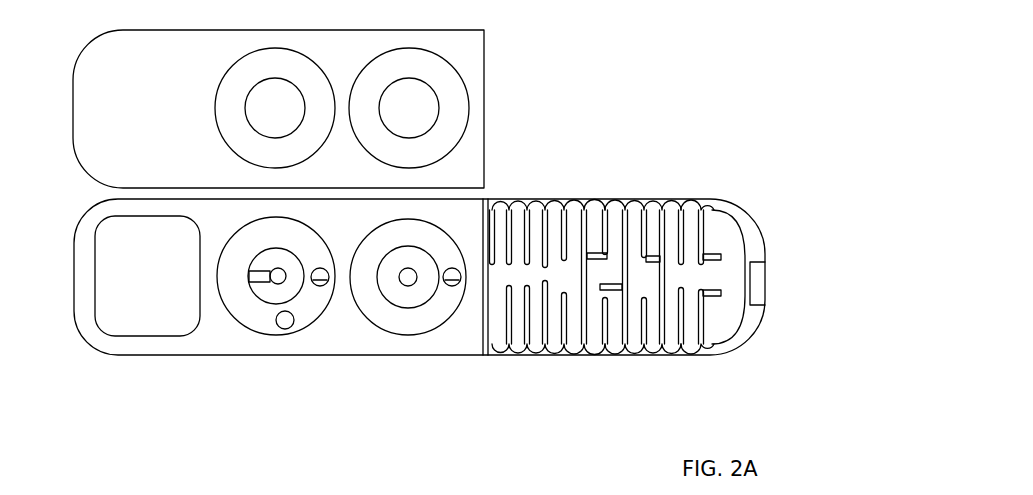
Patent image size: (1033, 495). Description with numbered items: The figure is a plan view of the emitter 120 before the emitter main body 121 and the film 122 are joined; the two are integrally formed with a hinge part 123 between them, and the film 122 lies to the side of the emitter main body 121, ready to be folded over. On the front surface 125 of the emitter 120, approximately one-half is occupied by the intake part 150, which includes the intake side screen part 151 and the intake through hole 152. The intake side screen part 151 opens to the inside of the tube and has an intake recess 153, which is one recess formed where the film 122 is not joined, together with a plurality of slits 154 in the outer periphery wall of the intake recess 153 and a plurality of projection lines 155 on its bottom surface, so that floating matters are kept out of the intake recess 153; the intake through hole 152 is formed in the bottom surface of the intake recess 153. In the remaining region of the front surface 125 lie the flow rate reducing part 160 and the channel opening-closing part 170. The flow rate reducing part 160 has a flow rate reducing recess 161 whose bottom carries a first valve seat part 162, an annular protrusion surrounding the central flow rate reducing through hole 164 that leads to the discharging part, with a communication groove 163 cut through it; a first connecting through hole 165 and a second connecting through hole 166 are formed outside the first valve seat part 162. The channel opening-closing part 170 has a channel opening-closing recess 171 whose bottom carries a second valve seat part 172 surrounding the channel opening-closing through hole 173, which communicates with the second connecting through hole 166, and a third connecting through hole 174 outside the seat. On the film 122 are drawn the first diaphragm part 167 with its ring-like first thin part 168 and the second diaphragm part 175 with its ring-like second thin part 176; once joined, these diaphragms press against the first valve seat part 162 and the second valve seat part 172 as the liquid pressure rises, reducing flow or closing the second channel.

The emitter 120 is at (426, 230).
The emitter main body 121 is at (752, 327).
The film 122 is at (77, 72).
The hinge part 123 is at (148, 194).
The front surface 125 is at (768, 238).
The intake part 150 is at (629, 192).
The intake side screen part 151 is at (633, 219).
The intake through hole 152 is at (540, 212).
The intake recess 153 is at (604, 212).
The slits 154 is at (665, 212).
The projection lines 155 is at (725, 244).
The flow rate reducing part 160 is at (262, 252).
The flow rate reducing recess 161 is at (290, 329).
The first valve seat part 162 is at (262, 284).
The communication groove 163 is at (272, 286).
The flow rate reducing through hole 164 is at (271, 304).
The first connecting through hole 165 is at (303, 330).
The second connecting through hole 166 is at (345, 342).
The first diaphragm part 167 is at (247, 163).
The first thin part 168 is at (233, 128).
The channel opening-closing part 170 is at (459, 252).
The channel opening-closing recess 171 is at (382, 320).
The second valve seat part 172 is at (413, 286).
The channel opening-closing through hole 173 is at (436, 298).
The third connecting through hole 174 is at (458, 290).
The second diaphragm part 175 is at (449, 125).
The second thin part 176 is at (433, 165).